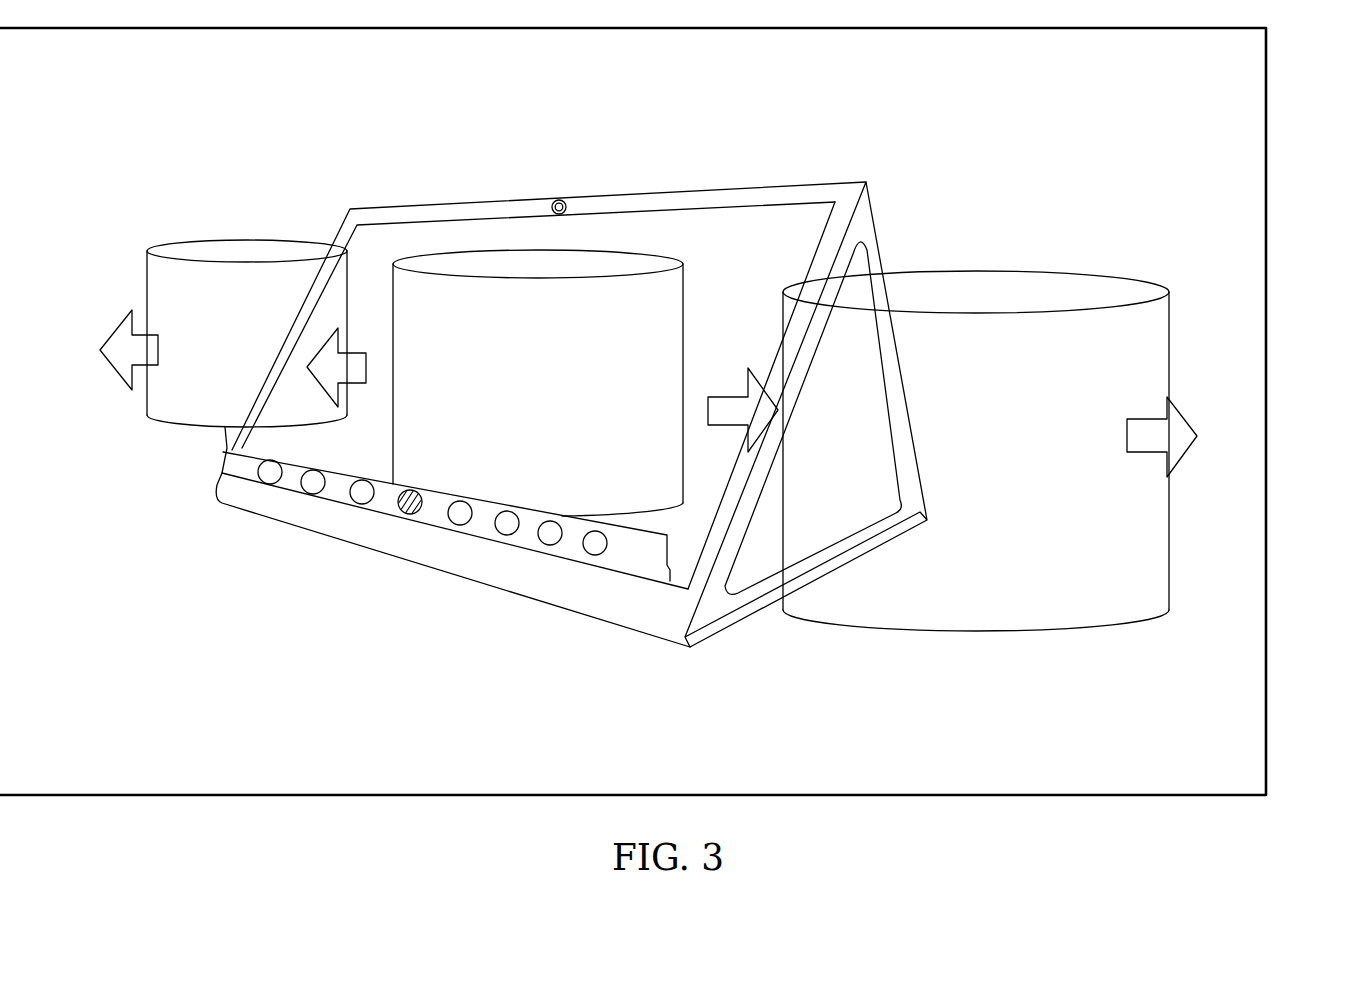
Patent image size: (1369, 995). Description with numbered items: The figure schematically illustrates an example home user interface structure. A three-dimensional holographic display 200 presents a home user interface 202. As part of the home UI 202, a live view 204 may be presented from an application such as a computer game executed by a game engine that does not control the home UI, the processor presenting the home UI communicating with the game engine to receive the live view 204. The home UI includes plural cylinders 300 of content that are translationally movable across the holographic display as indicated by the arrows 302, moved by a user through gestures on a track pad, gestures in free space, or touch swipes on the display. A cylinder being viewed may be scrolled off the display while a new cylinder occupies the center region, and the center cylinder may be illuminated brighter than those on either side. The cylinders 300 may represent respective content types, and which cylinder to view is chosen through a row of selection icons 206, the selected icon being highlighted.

The 3D holographic display 200 is at (1266, 350).
The home user interface 202 is at (534, 112).
The live view 204 is at (480, 300).
The selection icons 206 is at (595, 555).
The cylinders 300 is at (247, 241).
The arrows 302 is at (1182, 413).